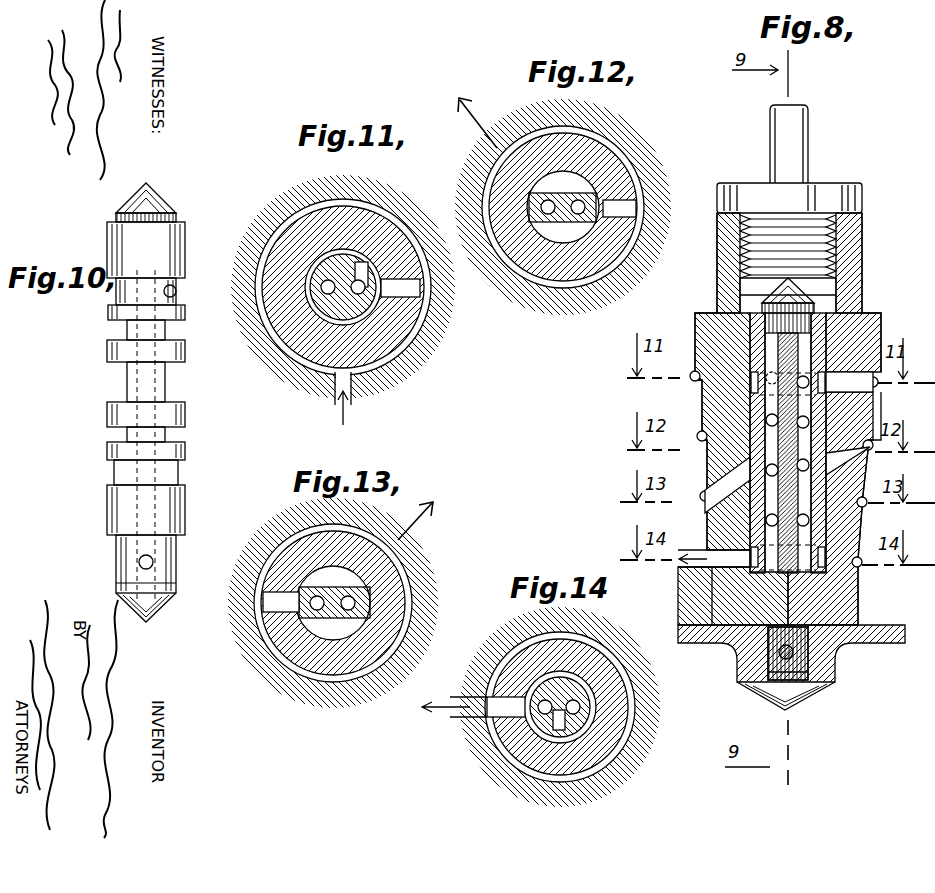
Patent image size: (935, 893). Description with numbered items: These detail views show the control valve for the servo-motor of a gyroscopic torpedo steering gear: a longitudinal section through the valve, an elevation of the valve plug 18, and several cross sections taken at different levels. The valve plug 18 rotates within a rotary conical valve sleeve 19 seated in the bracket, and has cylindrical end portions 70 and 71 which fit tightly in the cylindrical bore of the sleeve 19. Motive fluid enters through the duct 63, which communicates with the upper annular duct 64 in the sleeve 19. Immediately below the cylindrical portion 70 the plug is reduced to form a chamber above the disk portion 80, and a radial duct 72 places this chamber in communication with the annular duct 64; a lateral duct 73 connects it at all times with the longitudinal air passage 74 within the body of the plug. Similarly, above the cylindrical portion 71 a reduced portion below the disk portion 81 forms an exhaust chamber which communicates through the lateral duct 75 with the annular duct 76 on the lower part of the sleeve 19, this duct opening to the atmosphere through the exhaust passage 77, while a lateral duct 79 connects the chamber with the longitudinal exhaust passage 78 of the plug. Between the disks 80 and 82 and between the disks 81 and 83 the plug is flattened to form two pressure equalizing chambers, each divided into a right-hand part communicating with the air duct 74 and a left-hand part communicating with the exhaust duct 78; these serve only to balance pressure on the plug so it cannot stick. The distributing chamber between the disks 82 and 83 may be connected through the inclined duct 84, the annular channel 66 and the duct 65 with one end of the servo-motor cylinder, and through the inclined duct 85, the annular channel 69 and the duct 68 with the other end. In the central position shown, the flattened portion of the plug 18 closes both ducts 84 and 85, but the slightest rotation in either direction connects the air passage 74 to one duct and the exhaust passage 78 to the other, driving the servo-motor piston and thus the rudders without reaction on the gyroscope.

In FIG. 8, the valve plug 18 is at (750, 322).
In FIG. 10, the valve plug 18 is at (150, 420).
In FIG. 11, the valve plug 18 is at (337, 268).
In FIG. 12, the valve plug 18 is at (565, 172).
In FIG. 13, the valve plug 18 is at (365, 570).
In FIG. 8, the conical valve sleeve 19 is at (855, 272).
In FIG. 11, the conical valve sleeve 19 is at (298, 240).
In FIG. 12, the conical valve sleeve 19 is at (538, 258).
In FIG. 13, the conical valve sleeve 19 is at (290, 560).
In FIG. 14, the conical valve sleeve 19 is at (560, 707).
In FIG. 8, the duct 63 is at (870, 330).
In FIG. 11, the duct 63 is at (355, 392).
In FIG. 11, the upper annular duct 64 is at (421, 323).
In FIG. 12, the duct 65 is at (495, 150).
In FIG. 12, the annular duct 66 is at (640, 178).
In FIG. 13, the duct 68 is at (420, 535).
In FIG. 13, the annular groove 69 is at (410, 590).
In FIG. 10, the cylindrical end portion 70 is at (165, 228).
In FIG. 10, the cylindrical end portion 71 is at (128, 506).
In FIG. 8, the radial duct 72 is at (872, 385).
In FIG. 11, the radial duct 72 is at (406, 290).
In FIG. 8, the lateral duct 73 is at (870, 460).
In FIG. 11, the lateral duct 73 is at (385, 265).
In FIG. 8, the longitudinal air passage 74 is at (787, 449).
In FIG. 11, the longitudinal air passage 74 is at (365, 295).
In FIG. 12, the longitudinal air passage 74 is at (578, 212).
In FIG. 13, the longitudinal air passage 74 is at (350, 608).
In FIG. 14, the longitudinal air passage 74 is at (575, 707).
In FIG. 8, the lateral duct 75 is at (745, 604).
In FIG. 14, the lateral duct 75 is at (505, 710).
In FIG. 8, the annular duct 76 is at (740, 552).
In FIG. 14, the annular duct 76 is at (500, 655).
In FIG. 8, the exhaust passage 77 is at (702, 570).
In FIG. 14, the exhaust passage 77 is at (465, 715).
In FIG. 8, the longitudinally extending exhaust passage 78 is at (772, 441).
In FIG. 12, the longitudinally extending exhaust passage 78 is at (552, 195).
In FIG. 13, the longitudinally extending exhaust passage 78 is at (315, 600).
In FIG. 14, the longitudinally extending exhaust passage 78 is at (548, 712).
In FIG. 14, the lateral duct 79 is at (558, 715).
In FIG. 10, the disk portion 80 is at (185, 310).
In FIG. 8, the disk portion 81 is at (862, 495).
In FIG. 10, the disk portion 81 is at (185, 452).
In FIG. 8, the disk 82 is at (880, 452).
In FIG. 10, the disk 82 is at (185, 352).
In FIG. 8, the disk 83 is at (866, 470).
In FIG. 10, the disk 83 is at (185, 413).
In FIG. 12, the inclined duct 84 is at (620, 212).
In FIG. 8, the inclined duct 85 is at (712, 494).
In FIG. 13, the inclined duct 85 is at (275, 600).